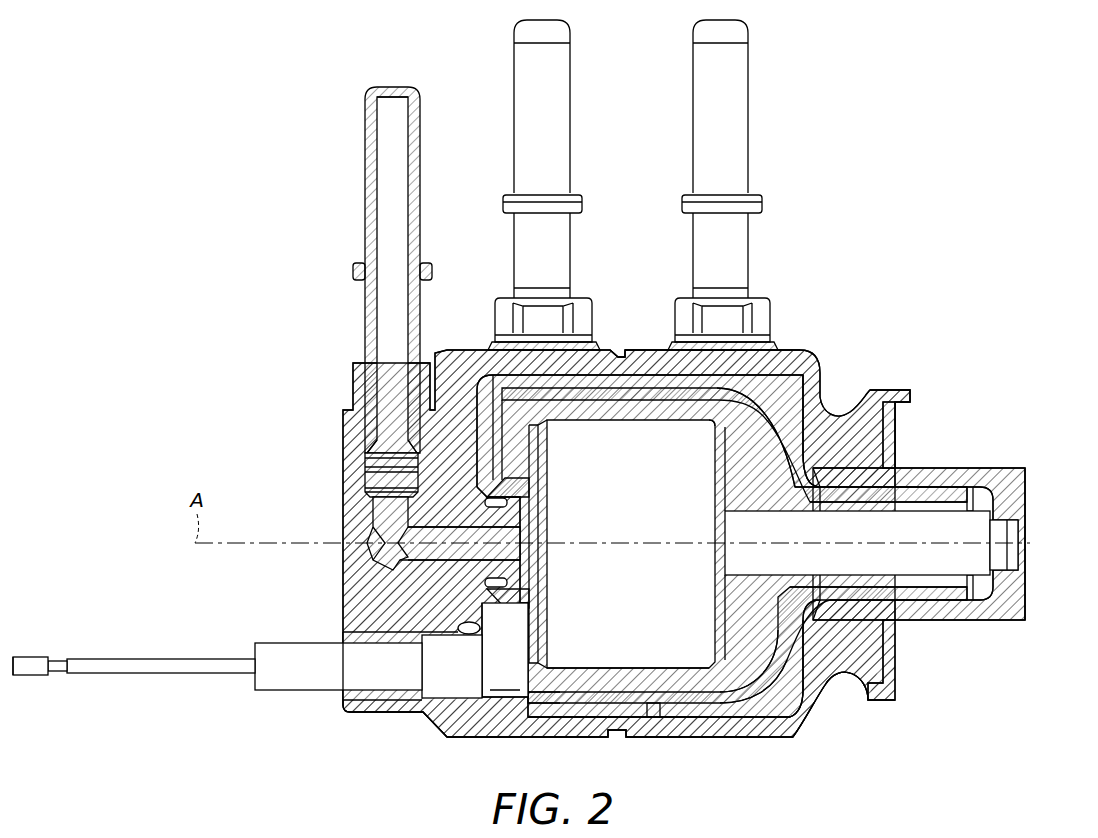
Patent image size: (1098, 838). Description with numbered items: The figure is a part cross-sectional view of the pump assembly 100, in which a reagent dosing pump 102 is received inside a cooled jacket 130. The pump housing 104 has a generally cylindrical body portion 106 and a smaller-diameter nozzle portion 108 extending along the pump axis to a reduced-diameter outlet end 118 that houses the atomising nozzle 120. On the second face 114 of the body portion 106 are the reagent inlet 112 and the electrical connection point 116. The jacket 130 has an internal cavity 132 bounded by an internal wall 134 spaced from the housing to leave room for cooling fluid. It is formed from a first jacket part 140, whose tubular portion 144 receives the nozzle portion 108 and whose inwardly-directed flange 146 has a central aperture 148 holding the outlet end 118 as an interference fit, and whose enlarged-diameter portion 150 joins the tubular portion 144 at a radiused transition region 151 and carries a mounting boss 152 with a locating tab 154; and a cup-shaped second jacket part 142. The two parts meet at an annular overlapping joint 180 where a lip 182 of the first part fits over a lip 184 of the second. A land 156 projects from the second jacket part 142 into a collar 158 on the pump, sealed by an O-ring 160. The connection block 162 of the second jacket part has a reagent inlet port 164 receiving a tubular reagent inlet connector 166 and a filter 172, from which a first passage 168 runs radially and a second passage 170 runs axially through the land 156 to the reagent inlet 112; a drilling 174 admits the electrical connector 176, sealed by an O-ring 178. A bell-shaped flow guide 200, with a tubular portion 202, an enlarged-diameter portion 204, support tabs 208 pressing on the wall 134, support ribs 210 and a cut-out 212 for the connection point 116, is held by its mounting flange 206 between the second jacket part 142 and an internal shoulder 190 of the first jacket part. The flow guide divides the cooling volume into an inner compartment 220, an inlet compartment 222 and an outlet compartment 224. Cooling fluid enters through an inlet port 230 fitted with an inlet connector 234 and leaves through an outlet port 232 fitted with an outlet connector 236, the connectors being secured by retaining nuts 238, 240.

The pump assembly 100 is at (240, 183).
The reagent dosing pump 102 is at (785, 695).
The pump housing 104 is at (690, 612).
The pump body portion 106 is at (607, 662).
The nozzle portion 108 is at (945, 572).
The reagent inlet 112 is at (480, 560).
The second face 114 is at (532, 637).
The electrical connection point 116 is at (503, 683).
The outlet end 118 is at (1005, 530).
The atomising nozzle 120 is at (1010, 557).
The jacket 130 is at (848, 396).
The internal cavity 132 is at (818, 612).
The internal wall 134 is at (745, 650).
The first jacket part 140 is at (905, 640).
The second jacket part 142 is at (405, 724).
The tubular portion 144 is at (955, 612).
The inwardly-directed flange 146 is at (1010, 590).
The central aperture 148 is at (1000, 517).
The enlarged-diameter portion 150 is at (725, 733).
The radiused transition region 151 is at (878, 668).
The mounting boss 152 is at (890, 435).
The locating tab 154 is at (900, 390).
The land 156 is at (507, 582).
The collar 158 is at (522, 488).
The O-ring 160 is at (507, 503).
The connection block 162 is at (327, 533).
The reagent inlet port 164 is at (375, 447).
The reagent inlet connector 166 is at (378, 133).
The first passage 168 is at (378, 517).
The second passage 170 is at (503, 607).
The filter 172 is at (370, 480).
The drilling 174 is at (362, 712).
The electrical connector 176 is at (282, 648).
The O-ring 178 is at (468, 634).
The annular overlapping joint 180 is at (618, 350).
The lip 182 is at (636, 355).
The lip 184 is at (637, 388).
The internal shoulder 190 is at (653, 388).
The flow guide 200 is at (763, 386).
The tubular portion 202 is at (910, 495).
The enlarged-diameter portion 204 is at (660, 717).
The mounting flange 206 is at (650, 692).
The support tabs 208 is at (968, 487).
The support ribs 210 is at (840, 672).
The cut-out 212 is at (540, 703).
The inner compartment 220 is at (808, 382).
The inlet compartment 222 is at (520, 377).
The outlet compartment 224 is at (718, 432).
The inlet port 230 is at (603, 345).
The outlet port 232 is at (783, 345).
The inlet connector 234 is at (520, 82).
The outlet connector 236 is at (700, 82).
The retaining nut 238 is at (505, 297).
The retaining nut 240 is at (762, 297).